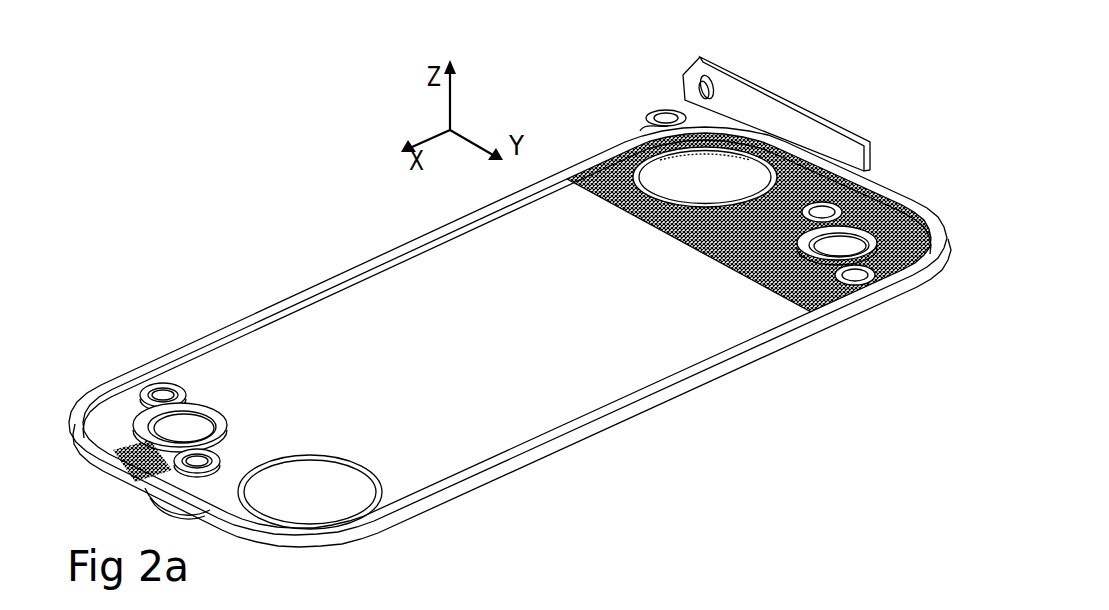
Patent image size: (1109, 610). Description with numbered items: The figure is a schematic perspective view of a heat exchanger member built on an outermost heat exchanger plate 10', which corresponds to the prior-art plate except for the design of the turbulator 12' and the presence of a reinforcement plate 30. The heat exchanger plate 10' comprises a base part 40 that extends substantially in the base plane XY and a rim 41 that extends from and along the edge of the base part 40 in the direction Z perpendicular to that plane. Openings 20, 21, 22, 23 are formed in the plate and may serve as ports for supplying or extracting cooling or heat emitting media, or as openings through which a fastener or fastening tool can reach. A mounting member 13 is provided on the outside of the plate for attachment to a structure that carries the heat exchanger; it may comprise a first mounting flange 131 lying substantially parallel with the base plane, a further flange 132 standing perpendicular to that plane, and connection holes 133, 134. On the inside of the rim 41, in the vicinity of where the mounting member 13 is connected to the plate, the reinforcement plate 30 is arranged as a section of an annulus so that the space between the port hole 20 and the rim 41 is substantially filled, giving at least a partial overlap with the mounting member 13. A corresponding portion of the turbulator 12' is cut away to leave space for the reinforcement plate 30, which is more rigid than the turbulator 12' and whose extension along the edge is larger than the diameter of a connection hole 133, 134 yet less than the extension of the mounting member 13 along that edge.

The heat exchanger plate 10' is at (510, 337).
The turbulator 12' is at (493, 327).
The mounting member 13 is at (742, 86).
The first mounting flange 131 is at (640, 130).
The bracket plate 132 is at (812, 123).
The connection hole 133 is at (647, 115).
The connection hole 134 is at (712, 84).
The port hole 20 is at (724, 193).
The opening 21 is at (326, 508).
The opening 22 is at (853, 257).
The opening 23 is at (172, 431).
The reinforcement plate 30 is at (703, 137).
The base part 40 is at (517, 437).
The rim 41 is at (615, 409).